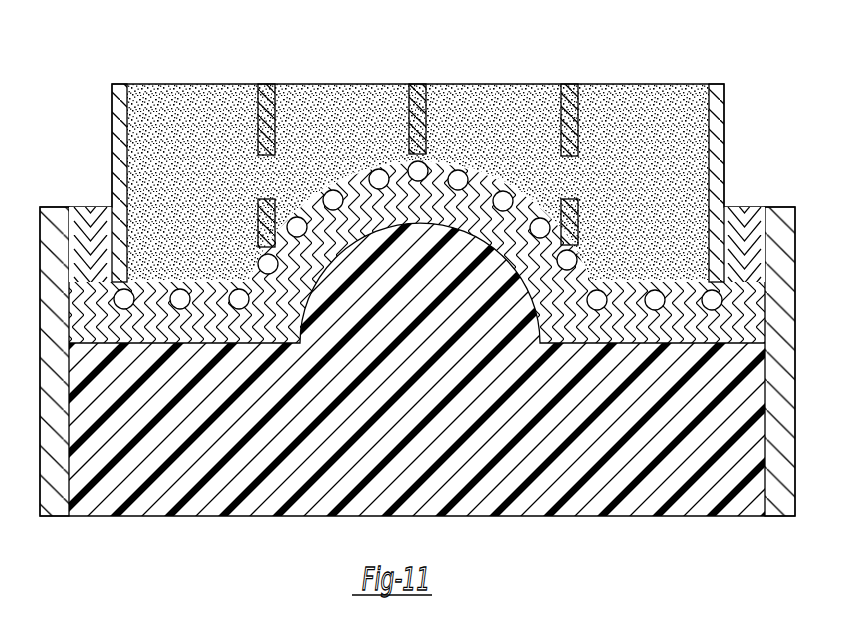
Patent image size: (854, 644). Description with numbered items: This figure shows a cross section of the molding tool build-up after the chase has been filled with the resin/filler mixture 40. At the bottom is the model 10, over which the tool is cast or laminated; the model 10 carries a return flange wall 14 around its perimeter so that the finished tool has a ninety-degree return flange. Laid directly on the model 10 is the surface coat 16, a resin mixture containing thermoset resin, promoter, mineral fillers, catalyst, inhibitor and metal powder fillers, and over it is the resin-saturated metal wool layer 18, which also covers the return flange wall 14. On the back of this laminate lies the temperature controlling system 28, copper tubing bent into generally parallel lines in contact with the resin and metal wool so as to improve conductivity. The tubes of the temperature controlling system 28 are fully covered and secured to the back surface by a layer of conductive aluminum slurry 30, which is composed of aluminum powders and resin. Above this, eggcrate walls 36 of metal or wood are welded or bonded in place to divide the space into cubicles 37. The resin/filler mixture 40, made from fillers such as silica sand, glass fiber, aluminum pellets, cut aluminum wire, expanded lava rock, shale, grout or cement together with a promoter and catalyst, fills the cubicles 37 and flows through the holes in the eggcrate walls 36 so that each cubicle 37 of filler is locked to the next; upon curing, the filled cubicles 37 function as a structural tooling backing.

The model 10 is at (427, 323).
The return flange wall 14 is at (782, 389).
The surface coat 16 is at (77, 207).
The metal wool layer 18 is at (747, 208).
The temperature controlling system 28 is at (712, 301).
The conductive aluminum slurry layer 30 is at (102, 207).
The eggcrate wall 36 is at (572, 94).
The cubicle 37 is at (174, 117).
The resin/filler mixture 40 is at (356, 110).